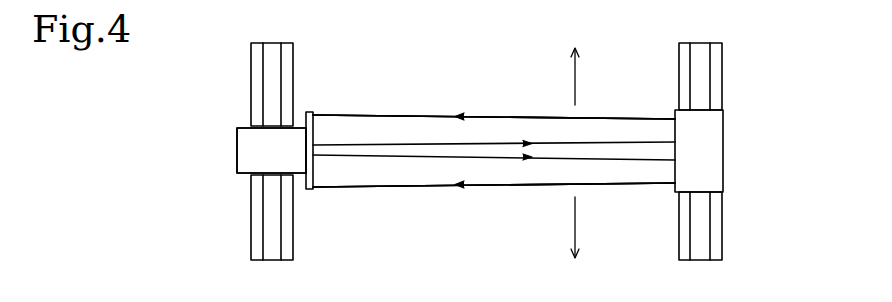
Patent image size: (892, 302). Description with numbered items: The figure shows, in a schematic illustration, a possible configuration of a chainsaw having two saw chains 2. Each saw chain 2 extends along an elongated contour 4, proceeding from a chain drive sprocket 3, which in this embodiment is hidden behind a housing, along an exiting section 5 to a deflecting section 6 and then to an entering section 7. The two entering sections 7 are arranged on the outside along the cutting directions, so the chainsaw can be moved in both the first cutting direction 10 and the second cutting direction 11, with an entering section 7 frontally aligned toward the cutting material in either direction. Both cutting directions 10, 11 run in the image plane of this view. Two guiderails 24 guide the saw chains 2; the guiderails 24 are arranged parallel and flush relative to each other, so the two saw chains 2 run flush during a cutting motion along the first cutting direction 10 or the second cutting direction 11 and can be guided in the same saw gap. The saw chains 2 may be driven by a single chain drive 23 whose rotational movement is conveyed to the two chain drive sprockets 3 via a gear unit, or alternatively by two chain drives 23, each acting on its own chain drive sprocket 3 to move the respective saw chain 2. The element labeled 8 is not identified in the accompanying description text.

The saw chain 2 is at (494, 151).
The chain drive sprocket 3 is at (254, 183).
The elongated contour 4 is at (494, 151).
The exiting section 5 is at (494, 151).
The deflecting section 6 is at (719, 151).
The entering section 7 is at (490, 151).
The mounting post 8 is at (238, 151).
The first cutting direction 10 is at (551, 227).
The second cutting direction 11 is at (552, 76).
The chain drive 23 is at (234, 183).
The guiderail 24 is at (541, 152).